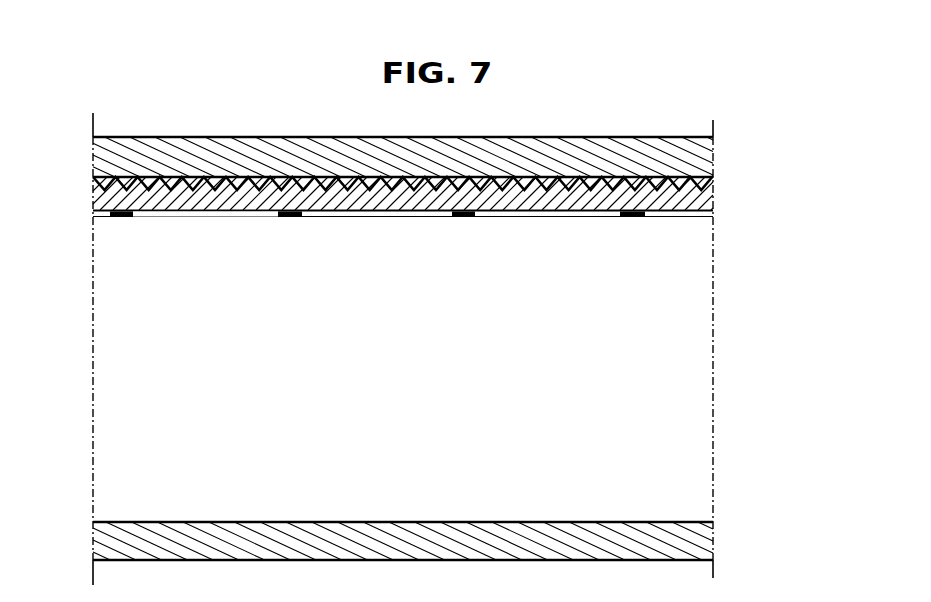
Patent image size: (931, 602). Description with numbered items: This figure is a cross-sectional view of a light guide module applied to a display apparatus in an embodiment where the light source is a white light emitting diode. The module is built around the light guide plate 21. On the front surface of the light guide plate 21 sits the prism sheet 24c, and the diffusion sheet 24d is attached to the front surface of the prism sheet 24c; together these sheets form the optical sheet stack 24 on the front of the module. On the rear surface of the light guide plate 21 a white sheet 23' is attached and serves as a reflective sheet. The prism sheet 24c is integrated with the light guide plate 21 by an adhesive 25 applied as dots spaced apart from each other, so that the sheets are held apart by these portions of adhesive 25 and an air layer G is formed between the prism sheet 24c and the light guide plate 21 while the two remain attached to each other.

The diffusion sheet 24d is at (696, 158).
The prism sheet 24c is at (696, 203).
The optical sheet 24 is at (812, 139).
The light guide plate 21 is at (696, 342).
The adhesive 25 is at (294, 217).
The air layer G is at (170, 212).
The white sheet 23' is at (445, 541).